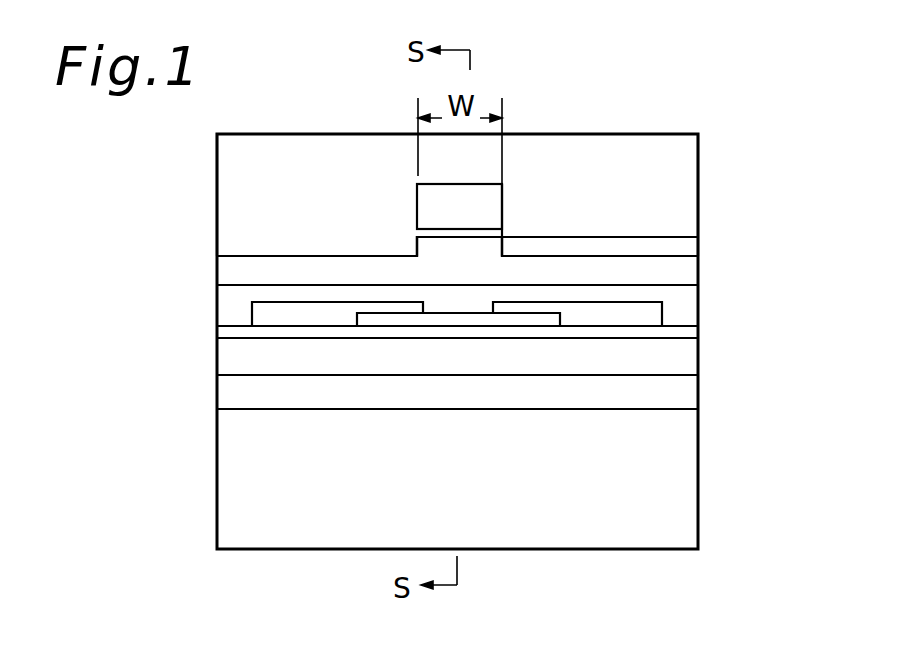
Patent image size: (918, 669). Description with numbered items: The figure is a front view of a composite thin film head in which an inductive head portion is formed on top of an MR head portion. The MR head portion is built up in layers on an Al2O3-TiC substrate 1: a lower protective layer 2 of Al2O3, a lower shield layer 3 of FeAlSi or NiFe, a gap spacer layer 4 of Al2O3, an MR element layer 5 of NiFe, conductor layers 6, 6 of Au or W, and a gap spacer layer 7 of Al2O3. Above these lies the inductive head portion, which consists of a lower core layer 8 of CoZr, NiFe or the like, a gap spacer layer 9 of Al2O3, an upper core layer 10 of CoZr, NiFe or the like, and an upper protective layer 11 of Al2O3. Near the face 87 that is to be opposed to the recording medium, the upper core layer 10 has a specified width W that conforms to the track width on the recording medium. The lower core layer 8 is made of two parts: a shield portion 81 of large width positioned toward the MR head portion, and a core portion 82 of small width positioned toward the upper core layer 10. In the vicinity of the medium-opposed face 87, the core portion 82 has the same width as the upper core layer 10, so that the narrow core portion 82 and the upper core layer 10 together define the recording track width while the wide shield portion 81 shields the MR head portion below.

The substrate 1 is at (665, 461).
The lower protective layer 2 is at (670, 396).
The lower shield layer 3 is at (673, 365).
The gap spacer layer 4 is at (683, 335).
The MR element layer 5 is at (438, 313).
The conductor layers 6 is at (270, 316).
The gap spacer layer 7 is at (468, 302).
The lower core layer 8 is at (714, 79).
The shield portion 81 is at (610, 263).
The core portion 82 is at (480, 250).
The gap spacer layer 9 is at (482, 232).
The upper core layer 10 is at (465, 188).
The upper protective layer 11 is at (613, 158).
The medium-opposed face 87 is at (532, 190).